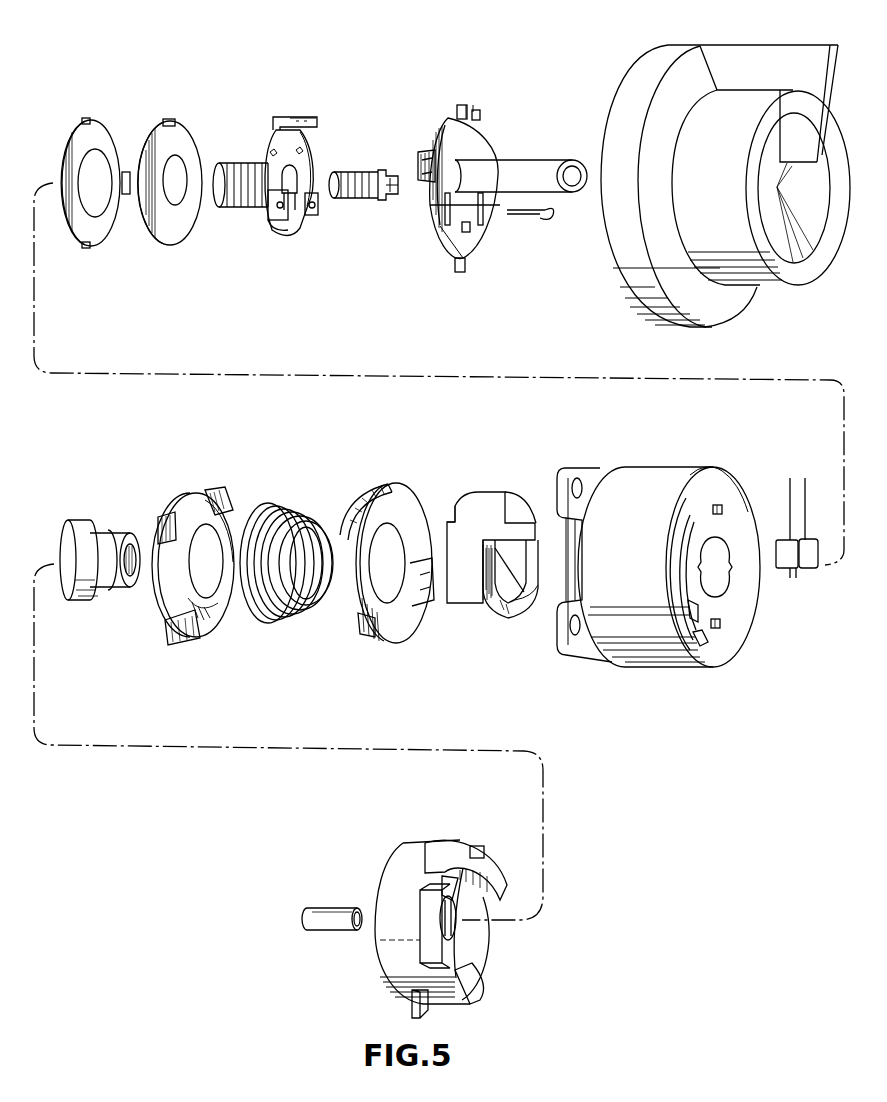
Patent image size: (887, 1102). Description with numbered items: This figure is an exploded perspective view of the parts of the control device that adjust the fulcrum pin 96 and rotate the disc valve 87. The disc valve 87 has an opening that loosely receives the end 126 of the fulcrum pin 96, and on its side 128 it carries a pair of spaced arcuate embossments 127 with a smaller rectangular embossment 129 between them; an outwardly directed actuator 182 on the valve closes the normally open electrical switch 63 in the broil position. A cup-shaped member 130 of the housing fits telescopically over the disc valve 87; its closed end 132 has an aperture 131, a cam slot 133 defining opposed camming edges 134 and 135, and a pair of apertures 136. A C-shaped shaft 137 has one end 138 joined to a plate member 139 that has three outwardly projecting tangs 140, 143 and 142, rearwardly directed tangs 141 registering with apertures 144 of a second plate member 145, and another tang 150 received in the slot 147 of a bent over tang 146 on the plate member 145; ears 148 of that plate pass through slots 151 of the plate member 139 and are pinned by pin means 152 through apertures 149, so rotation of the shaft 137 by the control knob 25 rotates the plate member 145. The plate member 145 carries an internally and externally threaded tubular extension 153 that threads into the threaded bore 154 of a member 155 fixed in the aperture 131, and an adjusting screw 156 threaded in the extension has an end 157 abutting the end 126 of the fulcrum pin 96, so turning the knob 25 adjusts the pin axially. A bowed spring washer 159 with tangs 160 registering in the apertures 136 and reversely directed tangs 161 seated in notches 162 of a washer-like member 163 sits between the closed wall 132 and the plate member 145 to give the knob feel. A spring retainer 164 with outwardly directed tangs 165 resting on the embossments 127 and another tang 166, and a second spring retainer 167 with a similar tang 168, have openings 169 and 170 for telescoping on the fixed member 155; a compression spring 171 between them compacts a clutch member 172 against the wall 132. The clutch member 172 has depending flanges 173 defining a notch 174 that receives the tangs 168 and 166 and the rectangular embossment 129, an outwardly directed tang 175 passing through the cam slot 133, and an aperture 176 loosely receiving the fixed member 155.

The control knob 25 is at (766, 52).
The electrical switch 63 is at (817, 548).
The disc valve 87 is at (441, 915).
The fulcrum pin 96 is at (360, 898).
The end of fulcrum pin 126 is at (330, 922).
The arcuate embossments 127 is at (486, 857).
The side of disc valve 128 is at (476, 950).
The rectangular embossment 129 is at (430, 884).
The cup-shaped member 130 is at (660, 460).
The aperture 131 is at (732, 584).
The closed end 132 is at (727, 488).
The cam slot 133 is at (680, 560).
The camming edge 134 is at (690, 615).
The camming edge 135 is at (708, 632).
The apertures 136 is at (722, 511).
The C-shaped shaft 137 is at (525, 160).
The end of shaft 138 is at (470, 160).
The plate member 139 is at (458, 118).
The tang 140 is at (442, 126).
The rearwardly directed tangs 141 is at (460, 150).
The tang 142 is at (422, 163).
The tang 143 is at (462, 272).
The apertures 144 is at (313, 181).
The plate member 145 is at (312, 176).
The bent over tang 146 is at (315, 120).
The slot 147 is at (272, 127).
The ears 148 is at (270, 222).
The apertures 149 is at (277, 206).
The tang 150 is at (468, 112).
The slots 151 is at (485, 220).
The pin means 152 is at (532, 218).
The tubular extension 153 is at (233, 205).
The threaded bore 154 is at (136, 585).
The fixed threaded member 155 is at (105, 520).
The adjusting screw 156 is at (374, 200).
The end of adjusting screw 157 is at (338, 190).
The bowed spring washer 159 is at (80, 143).
The tangs 160 is at (86, 117).
The reversely directed tangs 161 is at (127, 172).
The notches 162 is at (160, 138).
The washer-like member 163 is at (170, 232).
The spring retainer 164 is at (211, 610).
The outwardly directed tangs 165 is at (214, 499).
The tang 166 is at (163, 513).
The spring retainer 167 is at (408, 487).
The outwardly directed tang 168 is at (346, 504).
The opening 169 is at (221, 523).
The opening 170 is at (407, 513).
The compression spring 171 is at (288, 618).
The clutch member 172 is at (527, 595).
The depending flanges 173 is at (495, 555).
The notch 174 is at (462, 528).
The outwardly directed tang 175 is at (529, 525).
The aperture 176 is at (543, 592).
The actuator 182 is at (416, 1004).